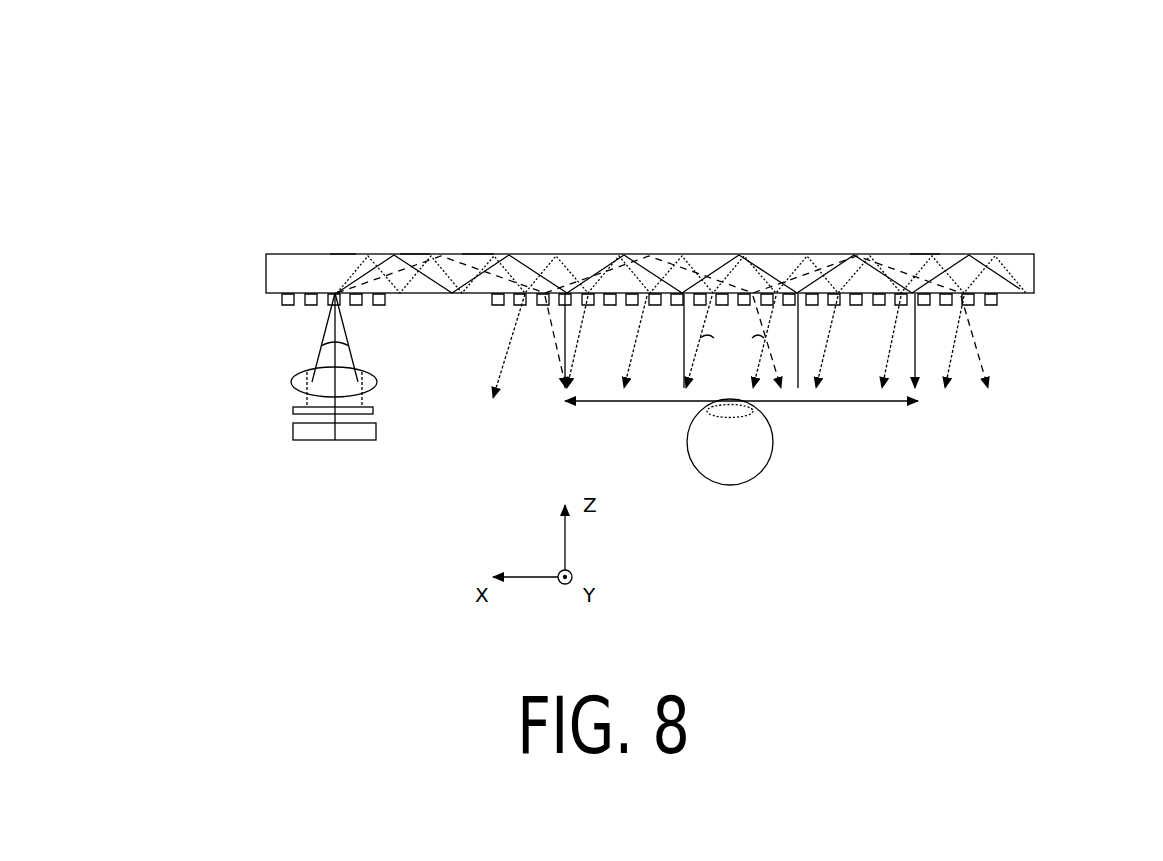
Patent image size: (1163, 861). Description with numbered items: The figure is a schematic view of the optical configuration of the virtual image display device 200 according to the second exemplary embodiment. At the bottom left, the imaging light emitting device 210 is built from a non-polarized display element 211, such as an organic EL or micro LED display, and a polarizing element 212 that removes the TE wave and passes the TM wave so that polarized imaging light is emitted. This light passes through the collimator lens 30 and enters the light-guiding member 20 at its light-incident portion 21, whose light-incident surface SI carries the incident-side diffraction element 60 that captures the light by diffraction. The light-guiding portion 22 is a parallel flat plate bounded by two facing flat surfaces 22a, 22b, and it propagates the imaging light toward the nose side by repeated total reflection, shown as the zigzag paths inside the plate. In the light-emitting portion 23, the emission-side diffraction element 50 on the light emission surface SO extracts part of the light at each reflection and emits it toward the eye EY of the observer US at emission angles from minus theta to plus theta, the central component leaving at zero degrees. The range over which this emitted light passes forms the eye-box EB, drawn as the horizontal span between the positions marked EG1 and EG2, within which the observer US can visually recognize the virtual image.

The virtual image display device 200 is at (397, 110).
The light-guiding member 20 is at (603, 253).
The light-incident portion 21 is at (343, 253).
The light-guiding portion 22 is at (415, 253).
The flat surface 22a is at (488, 346).
The flat surface 22b is at (478, 253).
The light-emitting portion 23 is at (925, 253).
The collimator lens 30 is at (293, 380).
The emission-side diffraction element 50 is at (1012, 302).
The incident-side diffraction element 60 is at (262, 298).
The imaging light emitting device 210 is at (183, 424).
The non-polarized display element 211 is at (302, 441).
The polarizing element 212 is at (293, 410).
The light-incident surface SI is at (332, 290).
The light emission surface SO is at (862, 253).
The eye-box EB is at (903, 403).
The first edge of eye box EG1 is at (565, 402).
The second edge of eye box EG2 is at (920, 402).
The eye EY is at (762, 447).
The observer US is at (700, 545).